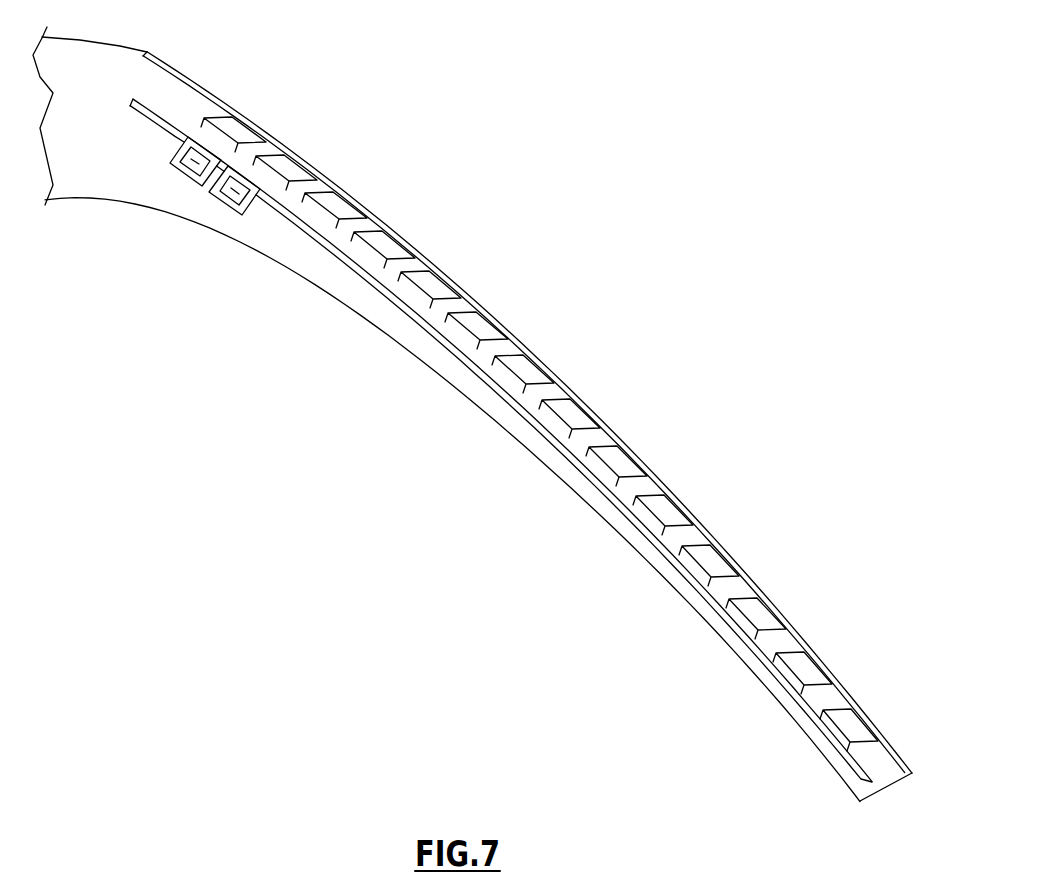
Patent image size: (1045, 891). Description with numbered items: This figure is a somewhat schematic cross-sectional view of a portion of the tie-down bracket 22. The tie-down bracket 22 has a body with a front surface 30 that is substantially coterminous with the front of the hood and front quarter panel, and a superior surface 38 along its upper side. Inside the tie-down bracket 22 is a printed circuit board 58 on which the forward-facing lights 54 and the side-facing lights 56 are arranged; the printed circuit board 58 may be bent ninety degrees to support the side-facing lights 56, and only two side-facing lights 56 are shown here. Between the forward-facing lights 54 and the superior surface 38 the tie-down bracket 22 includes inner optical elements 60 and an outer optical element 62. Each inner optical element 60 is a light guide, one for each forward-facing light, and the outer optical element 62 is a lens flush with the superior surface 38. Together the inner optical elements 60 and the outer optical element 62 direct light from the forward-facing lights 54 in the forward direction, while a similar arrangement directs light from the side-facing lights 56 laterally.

The tie-down bracket 22 is at (438, 212).
The front surface 30 is at (897, 782).
The superior surface 38 is at (125, 47).
The forward-facing lights 54 is at (723, 627).
The side-facing lights 56 is at (195, 163).
The printed circuit board 58 is at (682, 596).
The inner optical element 60 is at (760, 613).
The outer optical element 62 is at (761, 592).